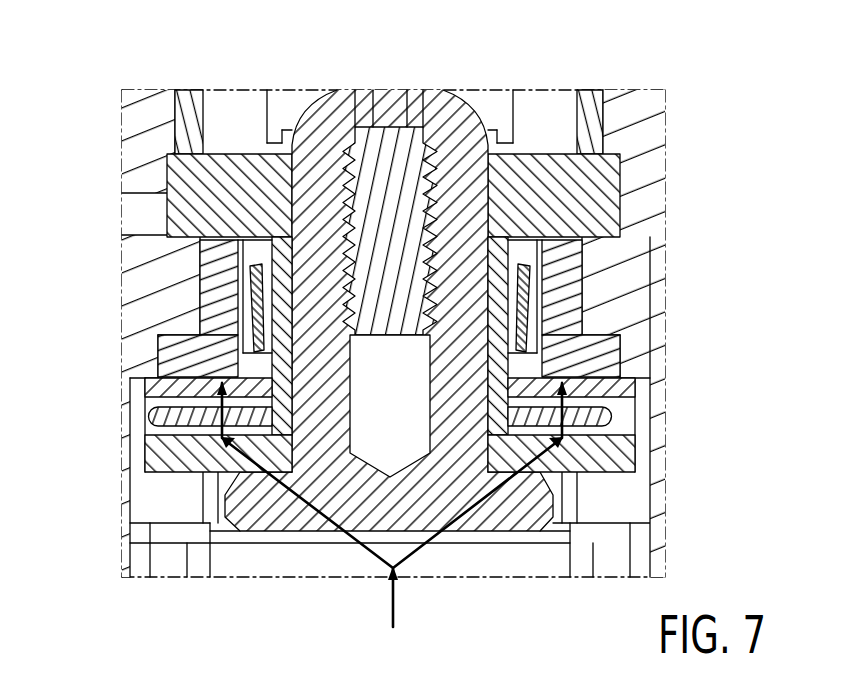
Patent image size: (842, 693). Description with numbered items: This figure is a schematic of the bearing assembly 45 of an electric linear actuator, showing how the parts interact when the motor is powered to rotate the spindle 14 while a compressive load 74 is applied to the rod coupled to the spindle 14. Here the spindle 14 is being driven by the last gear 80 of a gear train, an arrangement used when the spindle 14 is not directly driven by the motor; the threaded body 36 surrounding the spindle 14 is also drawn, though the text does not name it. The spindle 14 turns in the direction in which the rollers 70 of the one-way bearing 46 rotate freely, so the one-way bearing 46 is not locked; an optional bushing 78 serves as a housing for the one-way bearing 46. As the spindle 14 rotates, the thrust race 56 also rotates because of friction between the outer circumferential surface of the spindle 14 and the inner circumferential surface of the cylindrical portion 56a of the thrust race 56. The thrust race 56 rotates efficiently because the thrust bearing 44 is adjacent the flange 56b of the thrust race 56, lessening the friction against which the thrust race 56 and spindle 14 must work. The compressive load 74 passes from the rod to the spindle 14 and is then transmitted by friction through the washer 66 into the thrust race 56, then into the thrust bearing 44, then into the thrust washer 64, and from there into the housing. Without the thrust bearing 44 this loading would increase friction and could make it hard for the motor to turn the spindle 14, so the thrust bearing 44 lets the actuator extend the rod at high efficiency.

The spindle 14 is at (488, 192).
The nut 36 is at (330, 142).
The thrust bearing 44 is at (612, 413).
The bearing assembly 45 is at (625, 287).
The one-way bearing 46 is at (238, 315).
The thrust race 56 is at (625, 477).
The cylindrical portion 56a is at (283, 263).
The flange 56b is at (172, 400).
The thrust washer 64 is at (622, 388).
The washer 66 is at (257, 473).
The rollers 70 is at (252, 338).
The compressive load 74 is at (395, 600).
The bushing 78 is at (622, 353).
The last gear 80 is at (167, 173).